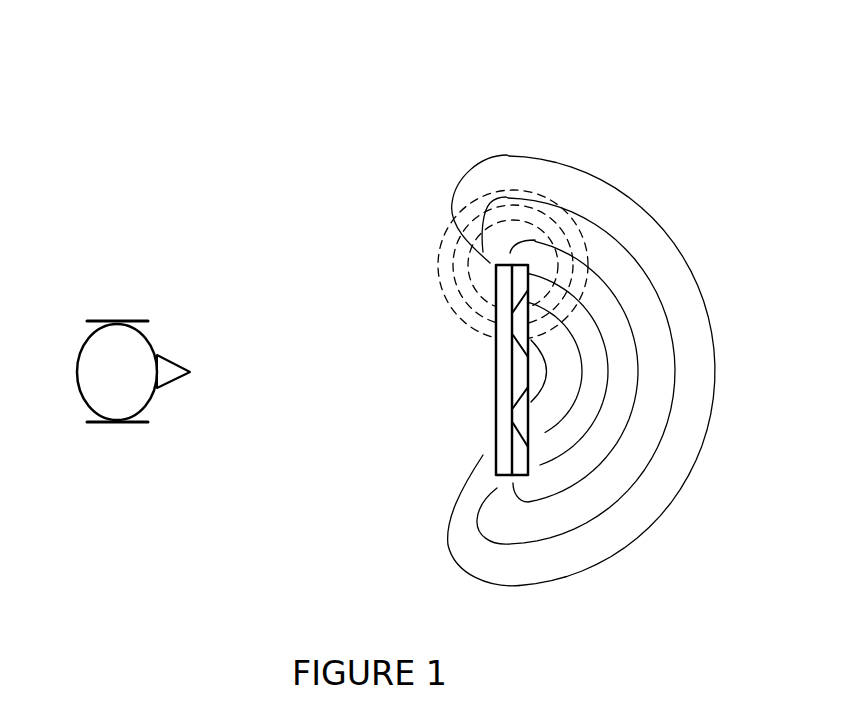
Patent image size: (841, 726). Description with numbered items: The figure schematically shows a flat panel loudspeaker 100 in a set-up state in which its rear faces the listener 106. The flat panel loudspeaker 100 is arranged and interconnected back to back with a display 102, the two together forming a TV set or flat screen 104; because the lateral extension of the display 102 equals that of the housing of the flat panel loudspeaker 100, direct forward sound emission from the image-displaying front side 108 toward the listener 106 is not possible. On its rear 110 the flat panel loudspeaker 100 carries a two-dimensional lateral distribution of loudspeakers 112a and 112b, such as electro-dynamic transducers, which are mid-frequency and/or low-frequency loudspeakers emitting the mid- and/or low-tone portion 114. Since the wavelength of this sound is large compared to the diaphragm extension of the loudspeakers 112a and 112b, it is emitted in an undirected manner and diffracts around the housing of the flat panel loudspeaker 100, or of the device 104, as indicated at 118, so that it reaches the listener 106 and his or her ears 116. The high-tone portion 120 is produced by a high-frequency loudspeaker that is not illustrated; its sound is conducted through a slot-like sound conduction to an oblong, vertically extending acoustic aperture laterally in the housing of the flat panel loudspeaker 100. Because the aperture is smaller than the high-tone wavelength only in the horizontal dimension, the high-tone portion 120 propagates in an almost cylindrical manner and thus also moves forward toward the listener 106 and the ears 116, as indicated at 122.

The flat panel loudspeaker 100 is at (541, 254).
The display 102 is at (493, 254).
The TV set or flat screen 104 is at (529, 130).
The listener 106 is at (82, 350).
The transducer bar 108 is at (496, 445).
The rear of the flat panel loudspeaker 110 is at (530, 476).
The loudspeaker 112a is at (530, 343).
The loudspeaker 112b is at (530, 437).
The mid- and/or low-tone portion 114 is at (675, 243).
The ears 116 is at (132, 320).
The diffraction of the mid- and/or low-tone portion 118 is at (413, 500).
The high-tone portion 120 is at (583, 296).
The forward propagation of the high-tone portion 122 is at (419, 260).